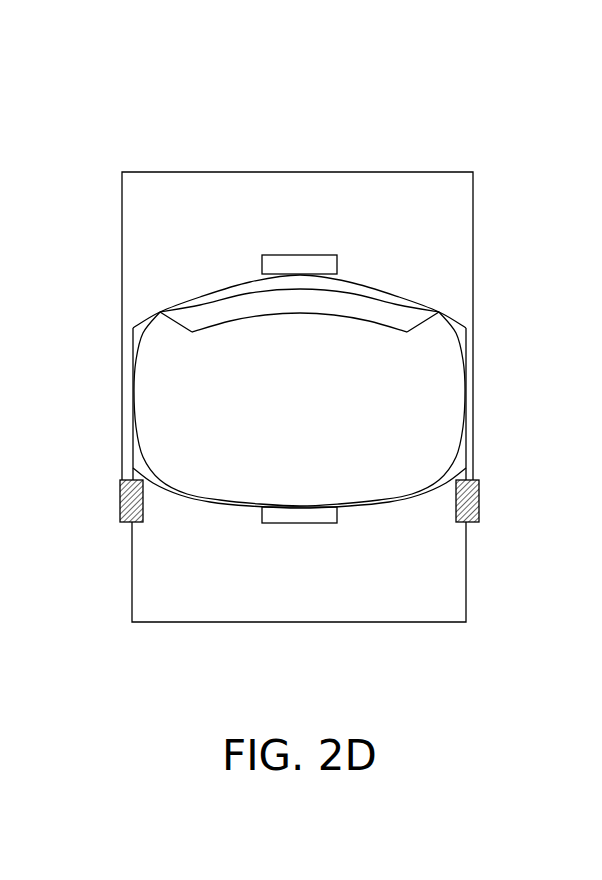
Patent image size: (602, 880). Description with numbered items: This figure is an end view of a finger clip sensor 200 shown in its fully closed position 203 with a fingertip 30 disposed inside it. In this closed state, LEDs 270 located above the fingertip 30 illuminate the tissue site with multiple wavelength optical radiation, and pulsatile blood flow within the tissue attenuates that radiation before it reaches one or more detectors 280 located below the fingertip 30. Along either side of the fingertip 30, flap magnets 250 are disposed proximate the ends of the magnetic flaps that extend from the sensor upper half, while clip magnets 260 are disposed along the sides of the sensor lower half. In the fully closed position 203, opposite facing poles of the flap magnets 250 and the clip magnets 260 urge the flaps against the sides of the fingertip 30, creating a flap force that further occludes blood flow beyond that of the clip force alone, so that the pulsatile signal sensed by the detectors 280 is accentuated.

The finger clip sensor 200 is at (160, 172).
The fully closed position 203 is at (293, 83).
The fingertip 30 is at (382, 295).
The LEDs 270 is at (273, 262).
The detectors 280 is at (273, 517).
The flap magnets 250 is at (120, 483).
The clip magnets 260 is at (143, 503).